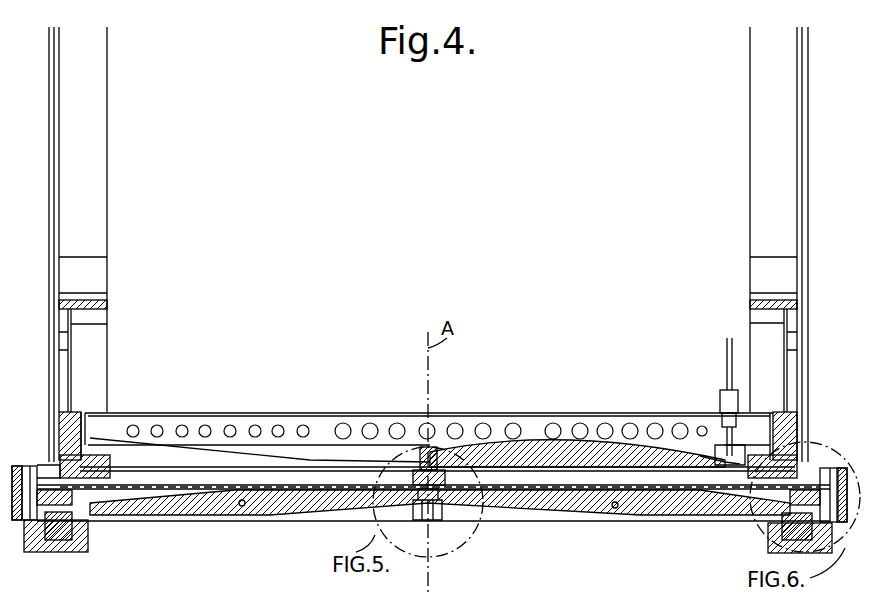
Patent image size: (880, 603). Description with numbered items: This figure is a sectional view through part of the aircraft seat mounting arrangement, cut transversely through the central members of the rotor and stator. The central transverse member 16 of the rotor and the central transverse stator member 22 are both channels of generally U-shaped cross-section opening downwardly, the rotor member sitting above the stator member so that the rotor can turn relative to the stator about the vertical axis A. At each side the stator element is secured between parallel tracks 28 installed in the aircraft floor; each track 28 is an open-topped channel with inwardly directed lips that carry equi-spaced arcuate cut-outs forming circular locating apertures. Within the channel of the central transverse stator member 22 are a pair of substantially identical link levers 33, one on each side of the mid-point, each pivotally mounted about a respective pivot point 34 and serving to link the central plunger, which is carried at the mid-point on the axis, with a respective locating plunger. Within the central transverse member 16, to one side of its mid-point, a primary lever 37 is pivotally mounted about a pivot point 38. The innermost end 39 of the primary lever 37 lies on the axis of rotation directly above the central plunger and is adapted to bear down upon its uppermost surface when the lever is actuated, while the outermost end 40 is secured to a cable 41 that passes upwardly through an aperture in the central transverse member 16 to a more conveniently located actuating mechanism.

The central transverse member 16 is at (418, 412).
The central transverse stator member 22 is at (509, 515).
The track 28 is at (88, 540).
The link lever 33 is at (210, 518).
The pivot point 34 is at (244, 508).
The primary lever 37 is at (558, 443).
The pivot point 38 is at (537, 450).
The innermost end 39 is at (425, 468).
The outermost end 40 is at (708, 456).
The cable 41 is at (725, 372).